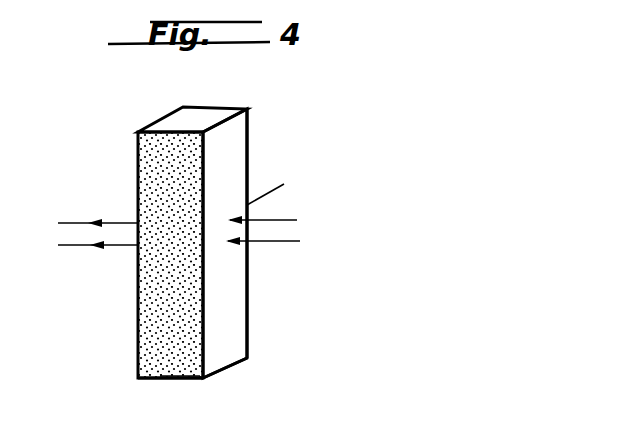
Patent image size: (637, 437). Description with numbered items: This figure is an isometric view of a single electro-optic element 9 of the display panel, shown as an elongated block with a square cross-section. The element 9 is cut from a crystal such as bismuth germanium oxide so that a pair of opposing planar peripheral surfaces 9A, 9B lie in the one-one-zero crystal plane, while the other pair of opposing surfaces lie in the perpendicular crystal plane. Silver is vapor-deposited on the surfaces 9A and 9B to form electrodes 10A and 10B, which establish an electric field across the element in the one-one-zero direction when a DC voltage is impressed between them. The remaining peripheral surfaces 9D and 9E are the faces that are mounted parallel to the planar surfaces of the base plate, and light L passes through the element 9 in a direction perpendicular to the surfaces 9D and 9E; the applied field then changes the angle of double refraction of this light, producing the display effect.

The electro-optic element 9 is at (213, 266).
The planar peripheral surface 9A is at (153, 378).
The planar peripheral surface 9B is at (247, 292).
The peripheral surface 9D is at (227, 360).
The peripheral surface 9E is at (168, 245).
The electrode 10A is at (182, 367).
The electrode 10B is at (247, 269).
The light L is at (297, 241).